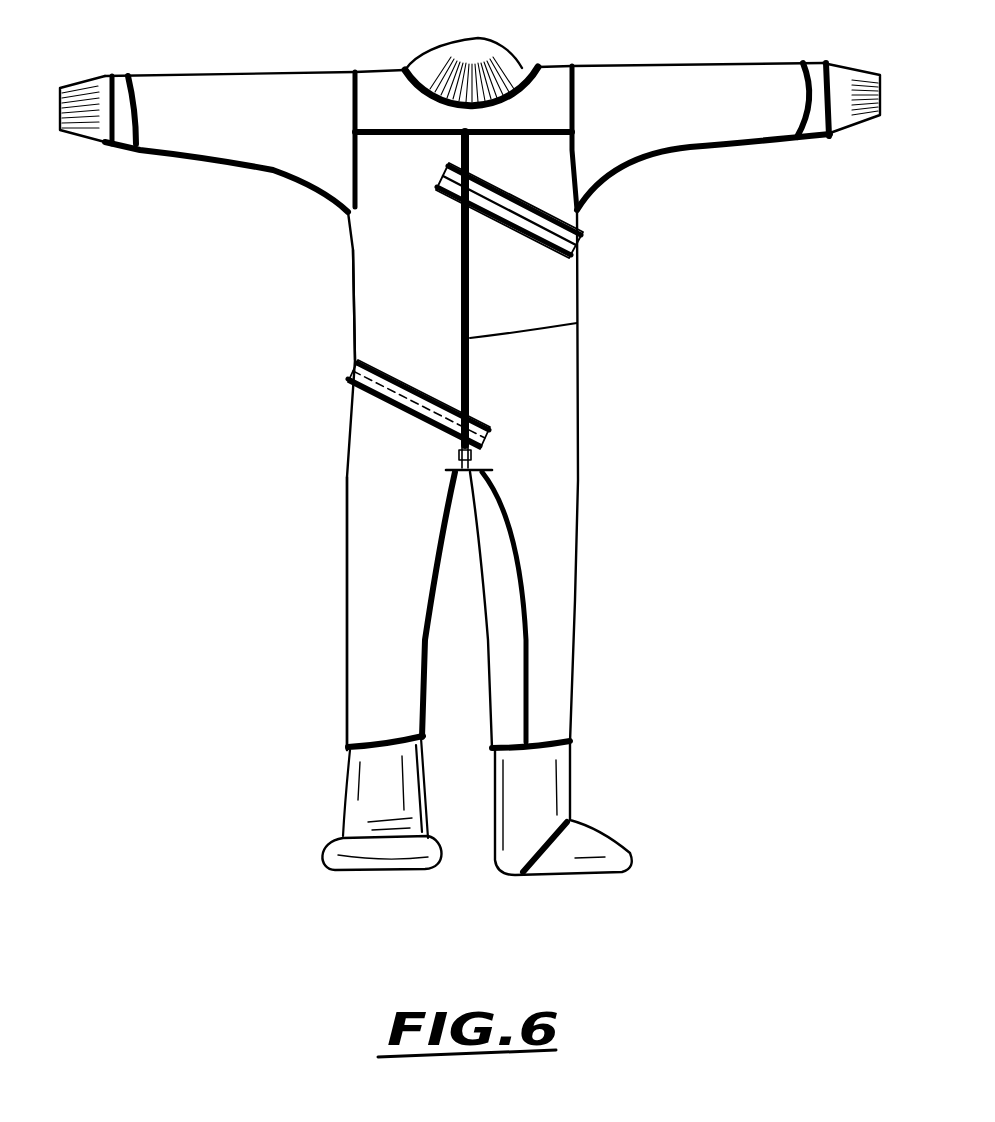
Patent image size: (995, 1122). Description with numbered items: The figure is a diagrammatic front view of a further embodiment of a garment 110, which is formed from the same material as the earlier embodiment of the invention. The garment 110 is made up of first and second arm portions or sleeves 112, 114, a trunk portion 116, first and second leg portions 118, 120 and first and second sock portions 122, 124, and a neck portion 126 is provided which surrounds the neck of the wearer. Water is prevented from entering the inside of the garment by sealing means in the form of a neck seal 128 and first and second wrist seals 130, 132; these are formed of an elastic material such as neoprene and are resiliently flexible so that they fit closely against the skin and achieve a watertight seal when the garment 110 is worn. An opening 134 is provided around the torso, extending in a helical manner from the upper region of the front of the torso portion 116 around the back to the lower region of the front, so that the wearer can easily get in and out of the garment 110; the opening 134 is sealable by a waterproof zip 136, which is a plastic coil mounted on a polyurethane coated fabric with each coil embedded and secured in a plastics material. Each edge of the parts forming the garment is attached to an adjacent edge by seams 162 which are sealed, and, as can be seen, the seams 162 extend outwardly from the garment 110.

The garment 110 is at (643, 415).
The first arm portion or sleeve 112 is at (242, 97).
The second arm portion or sleeve 114 is at (667, 90).
The trunk portion 116 is at (375, 305).
The first leg portion 118 is at (362, 632).
The second leg portion 120 is at (562, 558).
The first sock portion 122 is at (370, 803).
The second sock portion 124 is at (556, 797).
The neck portion 126 is at (552, 78).
The neck seal 128 is at (455, 45).
The first wrist seal 130 is at (88, 100).
The second wrist seal 132 is at (850, 82).
The opening 134 is at (579, 236).
The waterproof zip 136 is at (365, 387).
The seams 162 is at (727, 148).